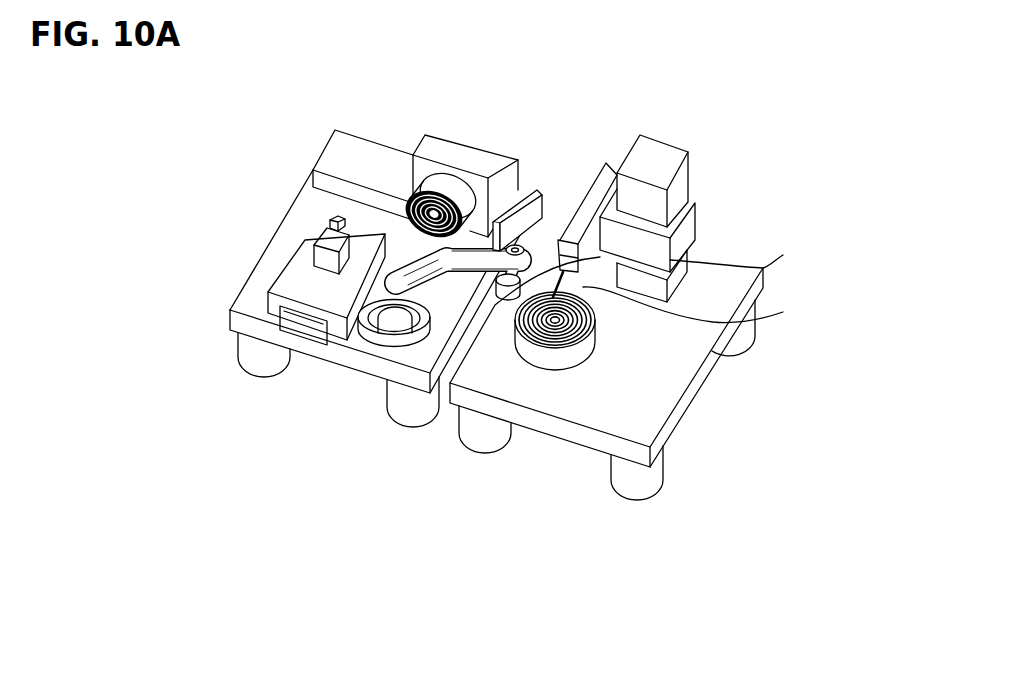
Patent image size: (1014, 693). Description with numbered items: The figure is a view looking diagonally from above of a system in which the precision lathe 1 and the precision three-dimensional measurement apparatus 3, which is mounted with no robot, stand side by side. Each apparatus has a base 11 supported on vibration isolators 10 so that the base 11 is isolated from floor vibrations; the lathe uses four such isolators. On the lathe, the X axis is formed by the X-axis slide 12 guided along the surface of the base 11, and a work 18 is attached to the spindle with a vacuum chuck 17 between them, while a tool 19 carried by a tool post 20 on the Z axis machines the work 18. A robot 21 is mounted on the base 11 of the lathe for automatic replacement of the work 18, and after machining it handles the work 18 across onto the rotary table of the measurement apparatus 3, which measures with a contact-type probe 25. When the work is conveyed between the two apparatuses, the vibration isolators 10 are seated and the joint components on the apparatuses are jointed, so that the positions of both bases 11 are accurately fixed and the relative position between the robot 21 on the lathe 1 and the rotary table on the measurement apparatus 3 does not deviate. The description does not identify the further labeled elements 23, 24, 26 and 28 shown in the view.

The precision lathe 1 is at (343, 402).
The precision three-dimensional measurement apparatus 3 is at (564, 468).
The vibration isolators 10 is at (254, 360).
The base 11 is at (260, 283).
The X-axis slide 12 is at (478, 162).
The vacuum chuck 17 is at (439, 196).
The work 18 is at (545, 252).
The tool 19 is at (339, 220).
The tool post 20 is at (327, 228).
The robot 21 is at (521, 196).
The cylindrical body 23 is at (553, 357).
The spiral coil 24 is at (596, 338).
The probe 25 is at (699, 306).
The support block 26 is at (683, 238).
The curved edge 28 is at (794, 252).